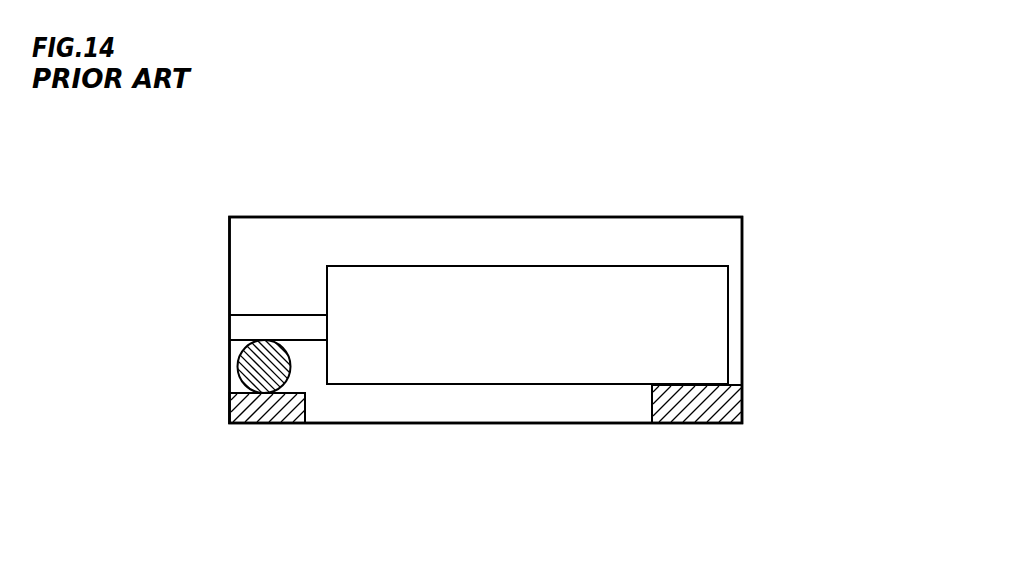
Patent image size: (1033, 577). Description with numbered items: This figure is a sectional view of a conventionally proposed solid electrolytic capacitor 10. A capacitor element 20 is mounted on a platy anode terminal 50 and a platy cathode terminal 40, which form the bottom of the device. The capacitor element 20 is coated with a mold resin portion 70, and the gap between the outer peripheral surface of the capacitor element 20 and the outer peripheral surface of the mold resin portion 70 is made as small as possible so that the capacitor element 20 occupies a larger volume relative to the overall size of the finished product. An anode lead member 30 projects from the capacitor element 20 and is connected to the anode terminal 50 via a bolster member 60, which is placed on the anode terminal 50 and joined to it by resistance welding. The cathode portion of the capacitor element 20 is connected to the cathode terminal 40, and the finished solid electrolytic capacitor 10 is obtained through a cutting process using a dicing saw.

The solid electrolytic capacitor 10 is at (647, 218).
The capacitor element 20 is at (527, 300).
The anode lead member 30 is at (260, 325).
The cathode terminal 40 is at (700, 408).
The anode terminal 50 is at (275, 417).
The bolster member 60 is at (247, 377).
The mold resin portion 70 is at (362, 238).